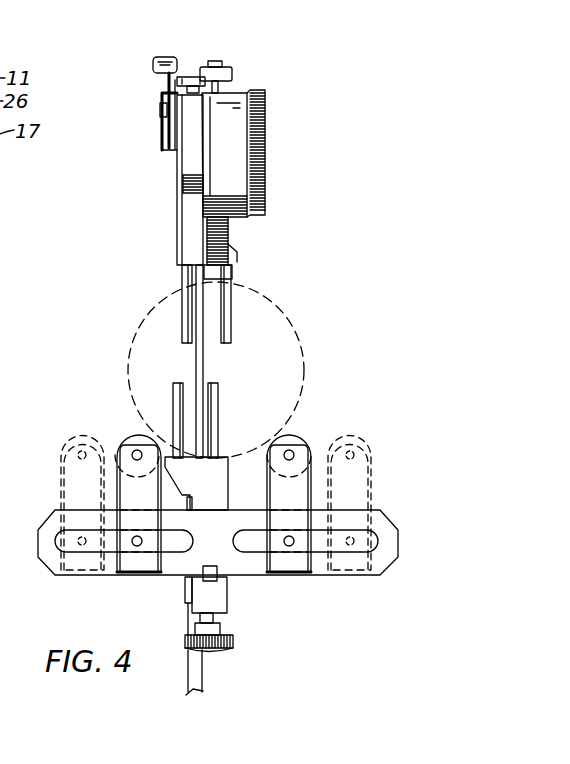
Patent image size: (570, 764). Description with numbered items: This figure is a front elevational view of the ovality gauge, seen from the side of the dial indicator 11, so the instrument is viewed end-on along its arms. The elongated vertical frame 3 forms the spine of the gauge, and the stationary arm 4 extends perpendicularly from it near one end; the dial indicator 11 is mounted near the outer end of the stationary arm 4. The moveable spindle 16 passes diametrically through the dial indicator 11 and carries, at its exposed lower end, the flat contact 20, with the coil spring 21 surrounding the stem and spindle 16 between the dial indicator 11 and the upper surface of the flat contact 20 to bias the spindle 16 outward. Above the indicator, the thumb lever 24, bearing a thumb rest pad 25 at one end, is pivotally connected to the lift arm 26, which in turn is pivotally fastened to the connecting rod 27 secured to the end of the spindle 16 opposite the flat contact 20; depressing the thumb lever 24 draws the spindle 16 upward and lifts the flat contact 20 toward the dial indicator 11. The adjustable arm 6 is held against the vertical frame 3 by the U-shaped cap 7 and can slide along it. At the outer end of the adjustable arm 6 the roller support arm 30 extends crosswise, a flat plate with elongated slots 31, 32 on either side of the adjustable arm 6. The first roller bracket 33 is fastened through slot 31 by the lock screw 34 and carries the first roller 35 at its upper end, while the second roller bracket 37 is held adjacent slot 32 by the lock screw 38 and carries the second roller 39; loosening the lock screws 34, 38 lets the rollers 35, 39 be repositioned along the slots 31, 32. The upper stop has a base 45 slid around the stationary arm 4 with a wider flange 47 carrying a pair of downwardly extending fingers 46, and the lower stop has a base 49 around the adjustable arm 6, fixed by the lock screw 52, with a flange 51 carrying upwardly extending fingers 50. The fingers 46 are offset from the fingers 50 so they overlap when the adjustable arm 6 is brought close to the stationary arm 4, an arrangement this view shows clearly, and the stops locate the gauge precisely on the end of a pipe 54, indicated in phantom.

The vertical frame 3 is at (195, 358).
The stationary arm 4 is at (183, 182).
The adjustable arm 6 is at (218, 578).
The U-shaped cap 7 is at (185, 595).
The dial indicator 11 is at (266, 103).
The moveable spindle 16 is at (232, 90).
The flat contact 20 is at (233, 273).
The coil spring 21 is at (229, 228).
The thumb lever 24 is at (160, 92).
The thumb rest pad 25 is at (167, 57).
The lift arm 26 is at (160, 118).
The connecting rod 27 is at (190, 77).
The roller support arm 30 is at (47, 520).
The slot 31 is at (55, 545).
The slot 32 is at (320, 552).
The first roller bracket 33 is at (118, 489).
The lock screw 34 is at (137, 547).
The first roller 35 is at (130, 499).
The second roller bracket 37 is at (313, 487).
The lock screw 38 is at (289, 547).
The second roller 39 is at (302, 504).
The base 45 is at (178, 207).
The fingers 46 is at (182, 327).
The flange 47 is at (238, 254).
The base 49 is at (198, 607).
The fingers 50 is at (174, 395).
The flange 51 is at (213, 467).
The lock screw 52 is at (234, 640).
The pipe 54 is at (302, 334).